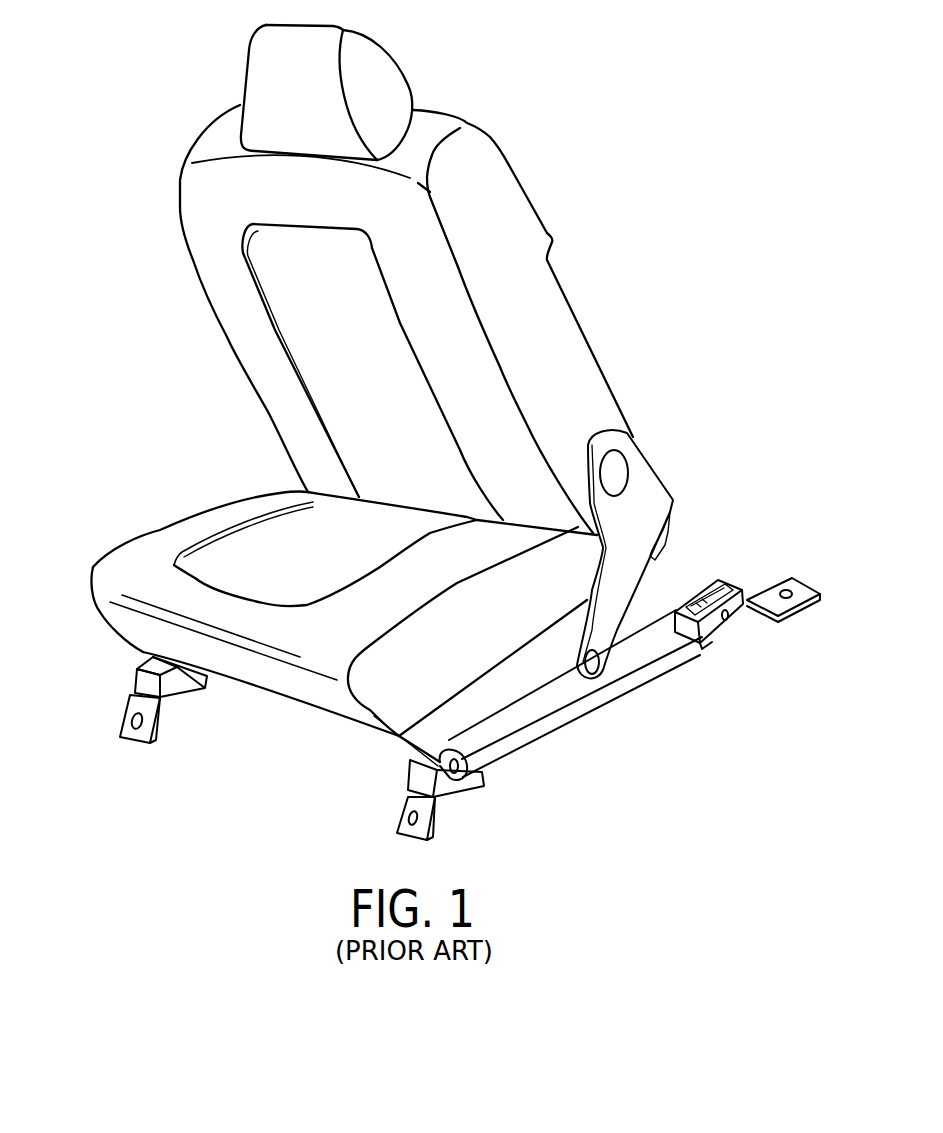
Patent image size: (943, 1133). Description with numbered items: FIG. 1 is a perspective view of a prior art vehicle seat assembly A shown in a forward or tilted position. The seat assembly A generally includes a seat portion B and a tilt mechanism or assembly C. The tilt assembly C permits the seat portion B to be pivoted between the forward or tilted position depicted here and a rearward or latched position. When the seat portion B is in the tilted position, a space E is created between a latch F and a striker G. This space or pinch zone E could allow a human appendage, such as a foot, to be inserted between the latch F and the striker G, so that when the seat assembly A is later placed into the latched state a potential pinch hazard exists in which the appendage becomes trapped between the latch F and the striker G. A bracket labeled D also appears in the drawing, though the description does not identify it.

The vehicle seat assembly A is at (199, 70).
The seat portion B is at (78, 553).
The tilt mechanism or assembly C is at (404, 750).
The rear seat mounting bracket D is at (800, 592).
The space or pinch zone E is at (697, 493).
The latch F is at (670, 513).
The striker G is at (688, 599).